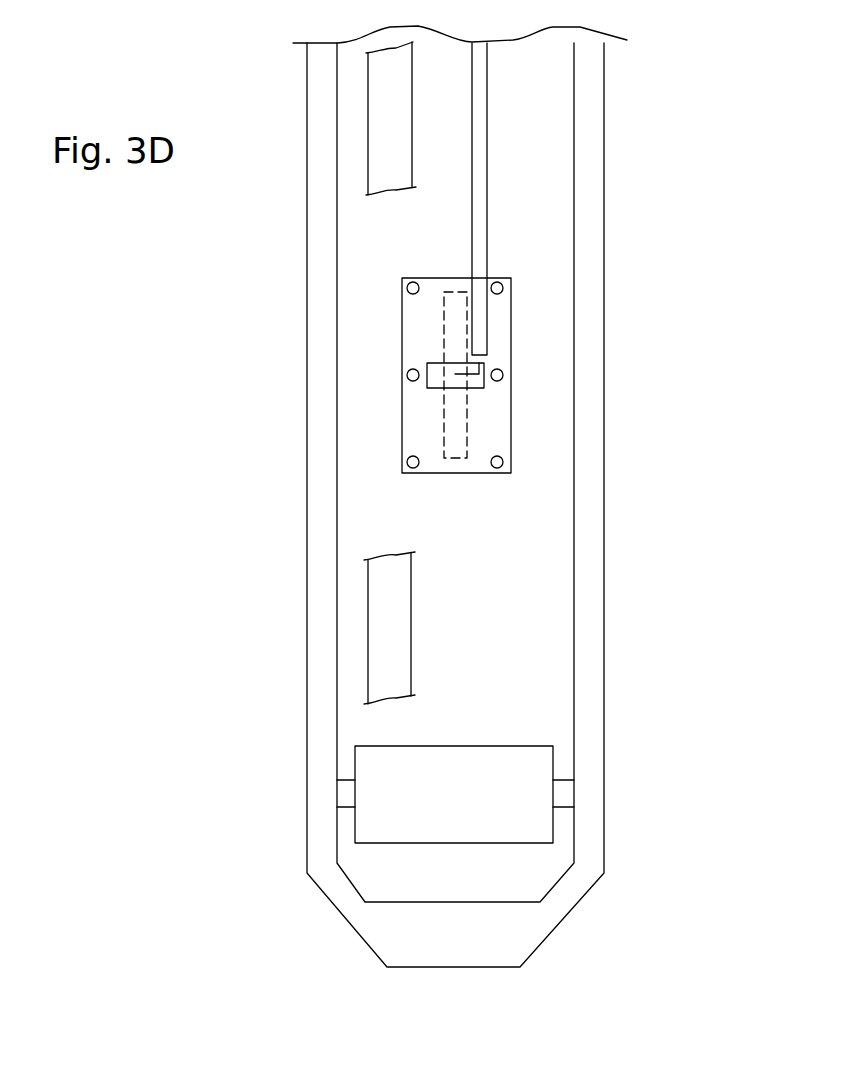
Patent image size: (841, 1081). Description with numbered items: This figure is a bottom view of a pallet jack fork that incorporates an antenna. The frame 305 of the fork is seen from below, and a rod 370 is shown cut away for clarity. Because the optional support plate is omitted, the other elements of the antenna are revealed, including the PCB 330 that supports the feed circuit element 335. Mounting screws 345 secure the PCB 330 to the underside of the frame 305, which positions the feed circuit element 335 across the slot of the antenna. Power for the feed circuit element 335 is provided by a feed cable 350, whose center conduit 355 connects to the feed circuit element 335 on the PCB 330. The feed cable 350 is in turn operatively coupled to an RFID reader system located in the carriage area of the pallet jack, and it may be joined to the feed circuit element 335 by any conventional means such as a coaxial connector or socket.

The frame 305 is at (608, 220).
The rod 370 is at (412, 88).
The PCB 330 is at (400, 427).
The mounting screws 345 is at (499, 286).
The feed cable 350 is at (472, 208).
The feed circuit element 335 is at (431, 354).
The center conduit 355 is at (460, 376).